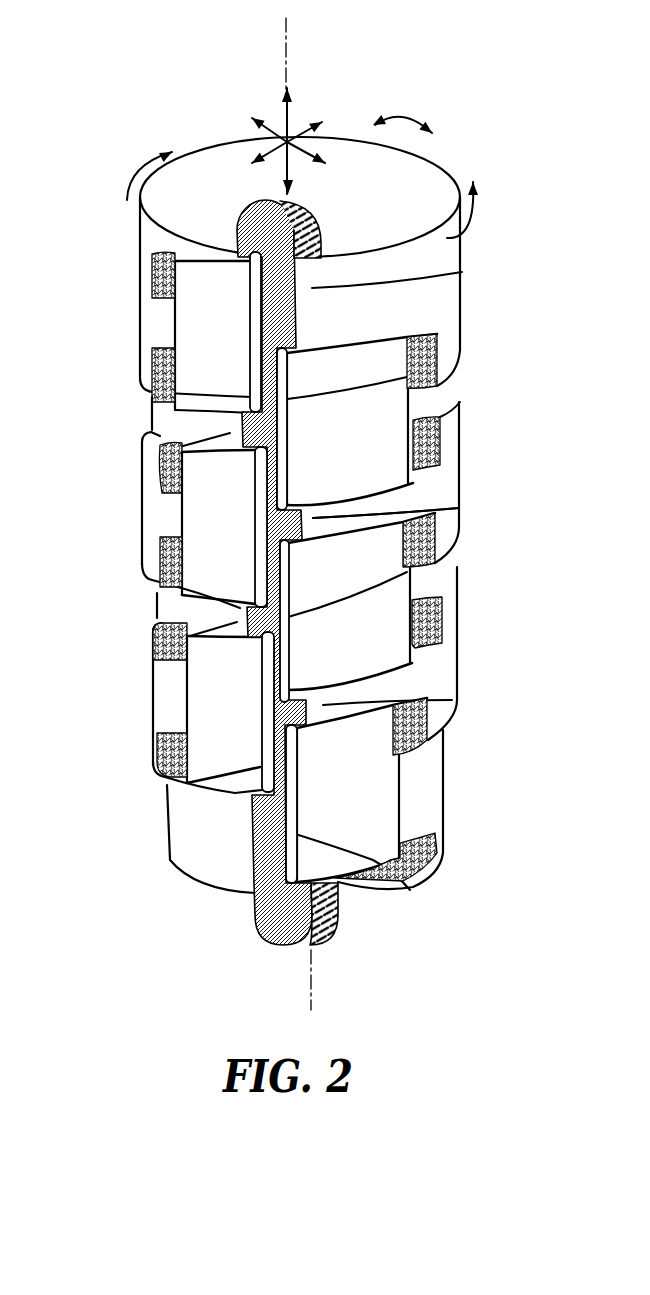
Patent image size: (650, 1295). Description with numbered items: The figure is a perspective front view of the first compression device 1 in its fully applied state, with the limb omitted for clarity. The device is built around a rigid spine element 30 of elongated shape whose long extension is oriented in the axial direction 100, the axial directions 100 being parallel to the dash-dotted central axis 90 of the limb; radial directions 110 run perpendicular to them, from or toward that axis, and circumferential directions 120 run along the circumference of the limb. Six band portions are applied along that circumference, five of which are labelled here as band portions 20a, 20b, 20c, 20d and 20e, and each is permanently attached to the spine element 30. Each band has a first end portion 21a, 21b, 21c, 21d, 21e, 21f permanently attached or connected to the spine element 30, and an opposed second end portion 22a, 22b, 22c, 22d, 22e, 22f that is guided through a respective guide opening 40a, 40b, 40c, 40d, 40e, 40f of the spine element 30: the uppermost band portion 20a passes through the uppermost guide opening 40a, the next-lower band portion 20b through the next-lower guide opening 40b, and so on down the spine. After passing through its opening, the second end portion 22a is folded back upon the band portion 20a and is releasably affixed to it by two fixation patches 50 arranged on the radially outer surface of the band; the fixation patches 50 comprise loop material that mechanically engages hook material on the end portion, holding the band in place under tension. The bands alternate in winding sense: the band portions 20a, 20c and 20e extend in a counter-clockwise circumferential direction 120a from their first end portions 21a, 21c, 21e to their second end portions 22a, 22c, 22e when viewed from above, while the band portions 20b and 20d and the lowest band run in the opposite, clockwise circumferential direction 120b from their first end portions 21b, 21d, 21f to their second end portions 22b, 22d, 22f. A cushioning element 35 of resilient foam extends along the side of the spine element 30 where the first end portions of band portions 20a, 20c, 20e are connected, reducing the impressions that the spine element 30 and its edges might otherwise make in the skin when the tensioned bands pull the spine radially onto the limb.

The compression device 1 is at (175, 68).
The band portion 20a is at (443, 307).
The band portion 20b is at (163, 420).
The band portion 20c is at (448, 468).
The band portion 20d is at (175, 607).
The band portion 20e is at (437, 672).
The first end portion 21a is at (462, 273).
The first end portion 21b is at (180, 458).
The first end portion 21c is at (440, 520).
The first end portion 21d is at (165, 640).
The first end portion 21e is at (455, 710).
The first end portion 21f is at (245, 835).
The second end portion 22a is at (193, 333).
The second end portion 22b is at (390, 412).
The second end portion 22c is at (200, 527).
The second end portion 22d is at (395, 602).
The second end portion 22e is at (197, 703).
The second end portion 22f is at (187, 833).
The spine element 30 is at (257, 230).
The cushioning element 35 is at (325, 927).
The first guide opening 40a is at (187, 382).
The guide opening 40b is at (435, 352).
The guide opening 40c is at (180, 570).
The guide opening 40d is at (415, 565).
The guide opening 40e is at (170, 783).
The guide opening 40f is at (398, 882).
The fixation patch 50 is at (167, 270).
The longitudinal axis 90 is at (287, 60).
The axial directions 100 is at (292, 128).
The radial directions 110 is at (282, 130).
The circumferential directions 120 is at (410, 127).
The counter-clockwise circumferential direction 120a is at (470, 217).
The clockwise circumferential direction 120b is at (138, 168).